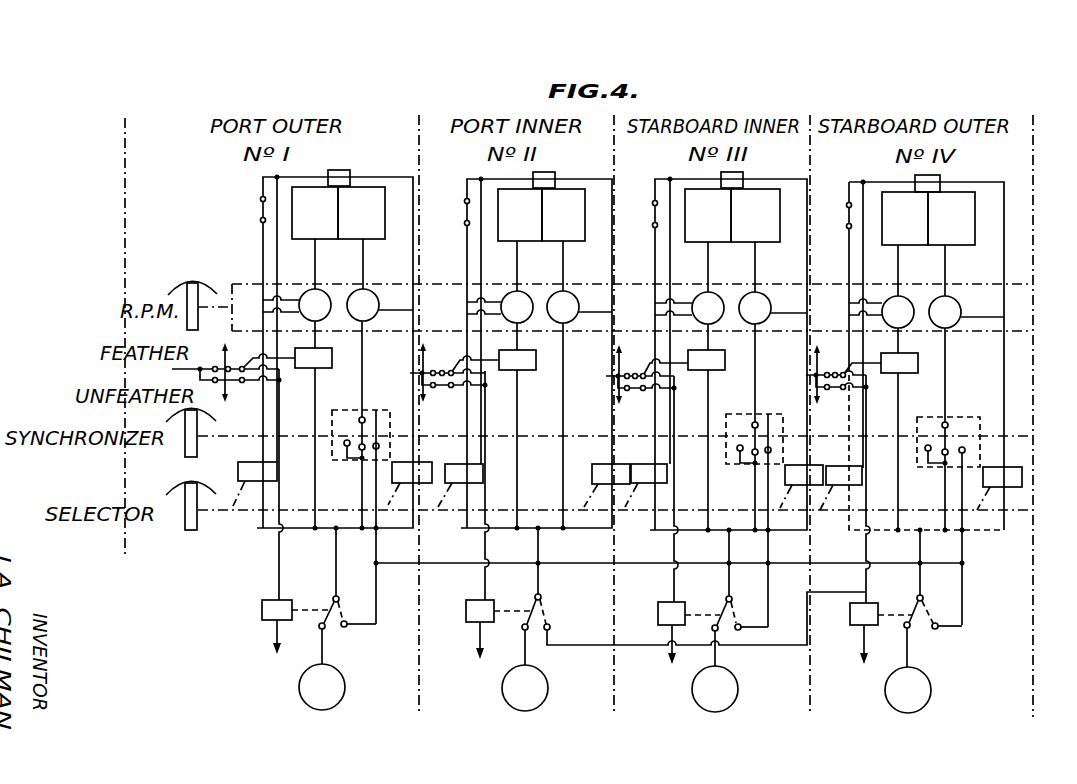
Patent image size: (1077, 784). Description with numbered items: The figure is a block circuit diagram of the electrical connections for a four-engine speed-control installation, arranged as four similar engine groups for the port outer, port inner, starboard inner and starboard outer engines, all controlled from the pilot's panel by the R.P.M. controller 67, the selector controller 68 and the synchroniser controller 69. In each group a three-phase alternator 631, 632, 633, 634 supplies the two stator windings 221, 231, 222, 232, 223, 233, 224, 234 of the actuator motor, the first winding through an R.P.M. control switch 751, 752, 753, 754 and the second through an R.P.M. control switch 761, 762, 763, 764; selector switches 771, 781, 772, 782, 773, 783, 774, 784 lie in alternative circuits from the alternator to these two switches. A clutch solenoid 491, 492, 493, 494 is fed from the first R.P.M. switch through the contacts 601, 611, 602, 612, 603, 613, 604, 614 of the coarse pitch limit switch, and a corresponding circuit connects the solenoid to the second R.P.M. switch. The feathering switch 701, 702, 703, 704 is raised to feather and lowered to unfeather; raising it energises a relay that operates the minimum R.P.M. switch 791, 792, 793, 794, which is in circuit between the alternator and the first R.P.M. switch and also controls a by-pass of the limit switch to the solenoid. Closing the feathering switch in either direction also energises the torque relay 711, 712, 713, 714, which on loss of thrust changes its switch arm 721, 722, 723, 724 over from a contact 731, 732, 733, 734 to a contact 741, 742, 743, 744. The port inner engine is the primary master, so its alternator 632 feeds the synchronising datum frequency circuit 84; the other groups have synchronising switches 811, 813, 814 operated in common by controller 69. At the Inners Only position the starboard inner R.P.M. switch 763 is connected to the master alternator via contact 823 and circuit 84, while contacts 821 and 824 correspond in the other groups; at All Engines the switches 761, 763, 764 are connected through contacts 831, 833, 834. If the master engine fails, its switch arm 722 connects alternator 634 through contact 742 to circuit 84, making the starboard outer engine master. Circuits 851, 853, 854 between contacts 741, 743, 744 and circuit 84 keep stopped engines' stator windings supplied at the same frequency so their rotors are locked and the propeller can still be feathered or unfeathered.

The stator winding 221 is at (326, 227).
The stator winding 231 is at (371, 227).
The clutch solenoid 491 is at (338, 170).
The coarse pitch limit switch contact 601 is at (261, 198).
The coarse pitch limit switch contact 611 is at (260, 221).
The R.P.M. control switch 751 is at (307, 292).
The R.P.M. control switch 761 is at (367, 292).
The minimum R.P.M. switch 791 is at (330, 363).
The feathering switch 701 is at (230, 382).
The synchronising switch 811 is at (332, 417).
The contact 821 is at (345, 447).
The contact 831 is at (377, 417).
The circuit 851 is at (378, 572).
The selector switch 771 is at (247, 463).
The selector switch 781 is at (422, 470).
The torque relay 711 is at (263, 602).
The switch arm 721 is at (330, 600).
The contact 731 is at (325, 632).
The contact 741 is at (347, 626).
The 3-phase alternator 631 is at (299, 683).
The stator winding 222 is at (531, 228).
The stator winding 232 is at (574, 228).
The clutch solenoid 492 is at (553, 172).
The coarse pitch limit switch contact 602 is at (466, 200).
The coarse pitch limit switch contact 612 is at (465, 223).
The R.P.M. control switch 752 is at (514, 293).
The R.P.M. control switch 762 is at (566, 294).
The minimum R.P.M. switch 792 is at (532, 364).
The feathering switch 702 is at (454, 378).
The selector switch 772 is at (473, 473).
The selector switch 782 is at (598, 468).
The torque relay 712 is at (468, 603).
The switch arm 722 is at (535, 602).
The contact 732 is at (527, 631).
The contact 742 is at (551, 626).
The 3-phase alternator 632 is at (502, 683).
The stator winding 223 is at (718, 229).
The stator winding 233 is at (763, 229).
The clutch solenoid 493 is at (745, 172).
The coarse pitch limit switch contact 603 is at (653, 203).
The coarse pitch limit switch contact 613 is at (653, 226).
The R.P.M. control switch 753 is at (703, 293).
The R.P.M. control switch 763 is at (758, 294).
The minimum R.P.M. switch 793 is at (720, 362).
The feathering switch 703 is at (647, 380).
The synchronising switch 813 is at (737, 418).
The contact 823 is at (738, 452).
The contact 833 is at (769, 446).
The circuit 853 is at (770, 607).
The selector switch 773 is at (650, 472).
The selector switch 783 is at (805, 474).
The torque relay 713 is at (660, 604).
The switch arm 723 is at (725, 599).
The contact 733 is at (718, 634).
The contact 743 is at (740, 630).
The 3-phase alternator 633 is at (692, 690).
The stator winding 224 is at (915, 233).
The stator winding 234 is at (959, 233).
The clutch solenoid 494 is at (938, 178).
The coarse pitch limit switch contact 604 is at (847, 204).
The coarse pitch limit switch contact 614 is at (847, 227).
The R.P.M. control switch 754 is at (902, 298).
The R.P.M. control switch 764 is at (950, 299).
The minimum R.P.M. switch 794 is at (910, 364).
The feathering switch 704 is at (843, 379).
The synchronising switch 814 is at (919, 421).
The contact 824 is at (926, 453).
The contact 834 is at (962, 447).
The circuit 854 is at (964, 582).
The selector switch 774 is at (858, 474).
The selector switch 784 is at (1013, 487).
The torque relay 714 is at (855, 620).
The switch arm 724 is at (917, 597).
The contact 734 is at (917, 630).
The contact 744 is at (938, 628).
The 3-phase alternator 634 is at (885, 689).
The R.P.M. controller 67 is at (187, 287).
The selector controller 68 is at (185, 522).
The synchroniser controller 69 is at (185, 437).
The synchronising datum frequency circuit 84 is at (584, 553).